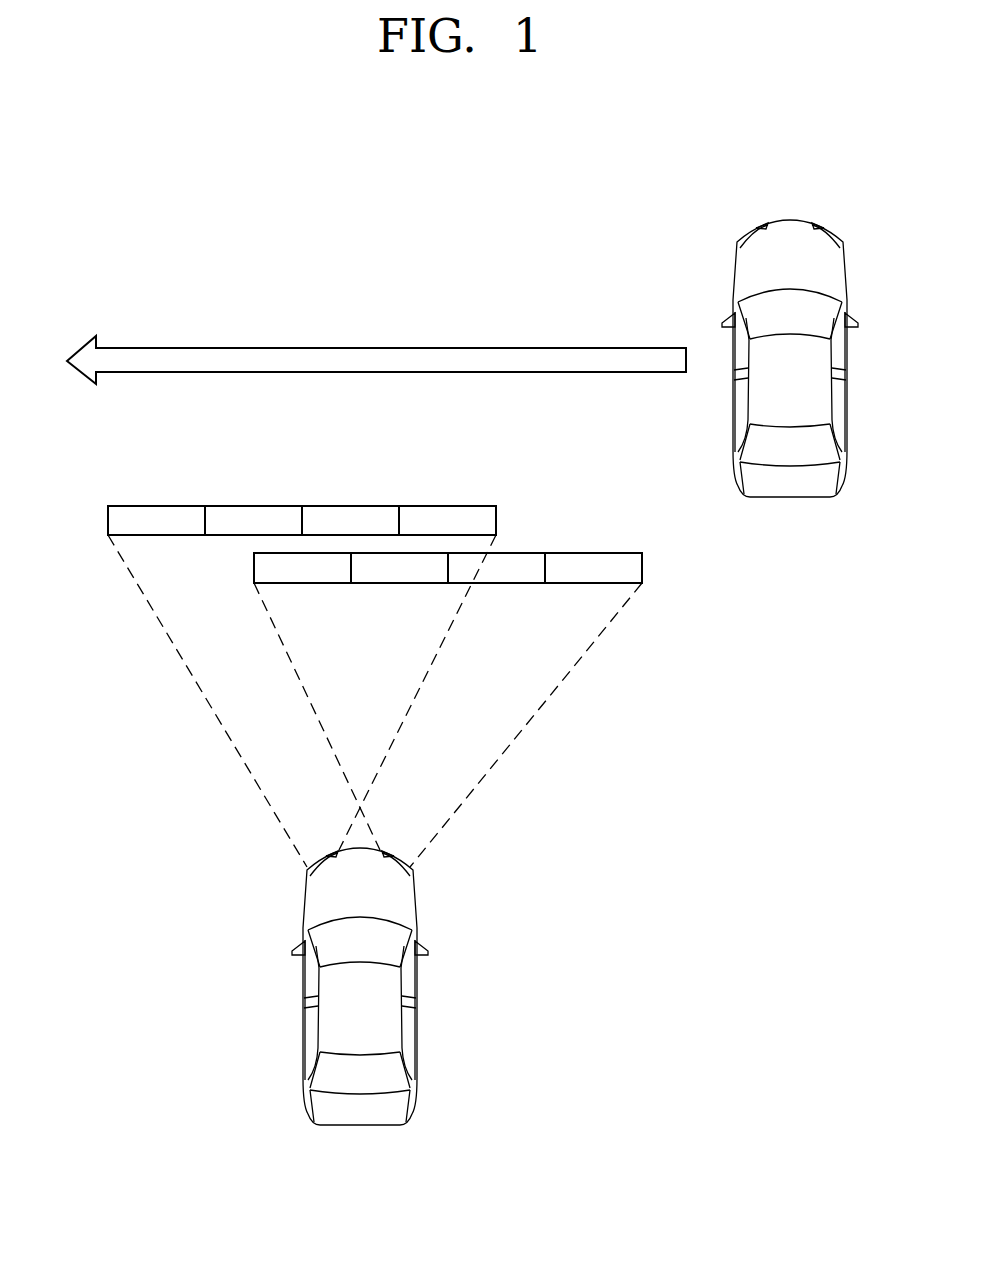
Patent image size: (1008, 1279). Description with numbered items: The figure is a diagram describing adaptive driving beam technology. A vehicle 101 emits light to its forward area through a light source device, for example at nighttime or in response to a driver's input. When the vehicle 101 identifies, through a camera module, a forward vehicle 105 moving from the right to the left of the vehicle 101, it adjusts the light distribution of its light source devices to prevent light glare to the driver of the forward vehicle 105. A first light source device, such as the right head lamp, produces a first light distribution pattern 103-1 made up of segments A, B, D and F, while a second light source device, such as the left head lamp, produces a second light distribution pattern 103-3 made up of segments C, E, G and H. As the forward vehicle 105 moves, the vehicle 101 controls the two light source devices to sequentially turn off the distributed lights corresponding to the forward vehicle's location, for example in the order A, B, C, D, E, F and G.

The vehicle 101 is at (373, 1112).
The first light distribution pattern 103-1 is at (132, 506).
The second light distribution pattern 103-3 is at (563, 553).
The forward vehicle 105 is at (788, 238).